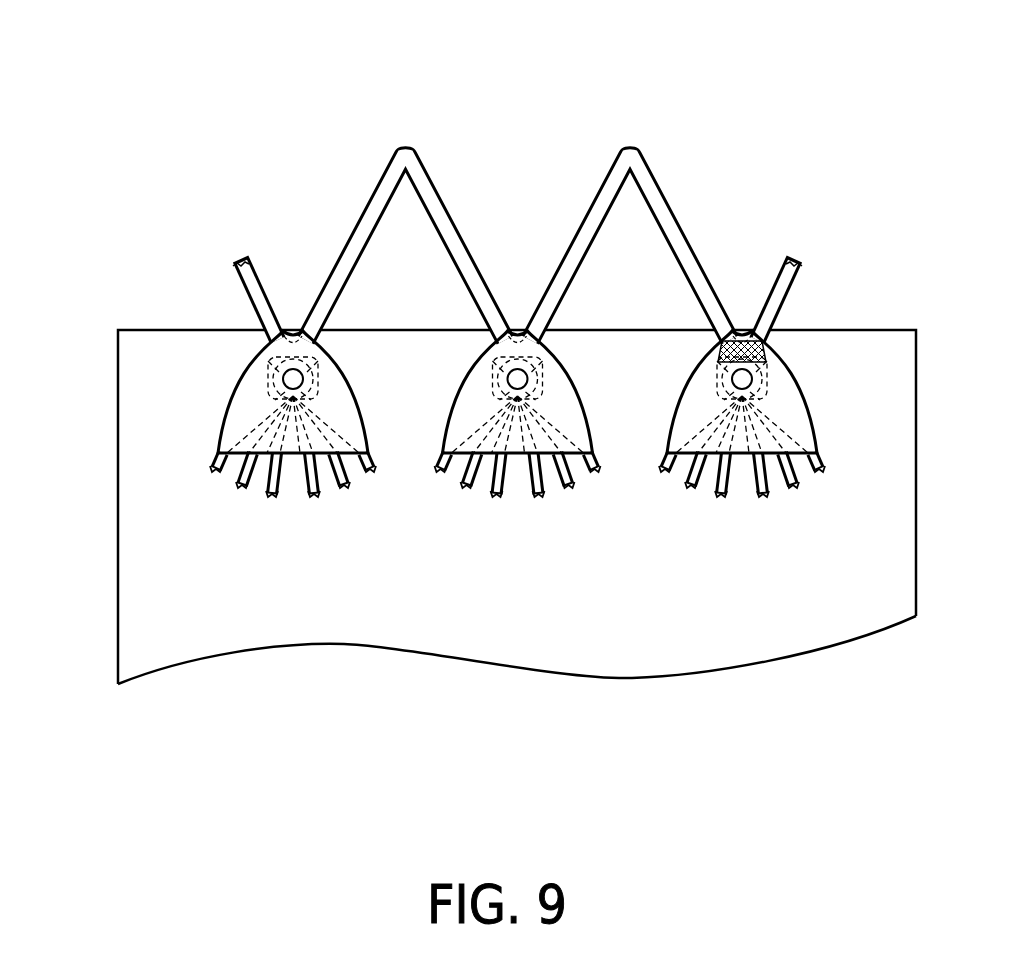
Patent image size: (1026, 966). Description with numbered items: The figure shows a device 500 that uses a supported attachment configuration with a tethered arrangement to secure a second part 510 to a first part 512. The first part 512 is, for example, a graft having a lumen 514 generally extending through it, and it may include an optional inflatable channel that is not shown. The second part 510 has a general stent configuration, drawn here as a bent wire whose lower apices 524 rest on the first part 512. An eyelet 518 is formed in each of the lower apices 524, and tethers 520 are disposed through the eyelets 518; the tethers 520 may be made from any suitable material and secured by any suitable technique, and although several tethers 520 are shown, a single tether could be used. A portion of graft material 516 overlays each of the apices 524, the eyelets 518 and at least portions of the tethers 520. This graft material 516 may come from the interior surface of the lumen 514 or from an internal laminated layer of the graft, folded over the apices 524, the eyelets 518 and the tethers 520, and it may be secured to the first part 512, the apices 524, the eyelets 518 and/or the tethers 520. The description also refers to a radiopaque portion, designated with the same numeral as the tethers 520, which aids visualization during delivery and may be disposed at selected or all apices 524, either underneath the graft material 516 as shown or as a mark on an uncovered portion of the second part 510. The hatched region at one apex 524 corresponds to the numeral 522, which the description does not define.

The device 500 is at (231, 100).
The second part 510 is at (662, 200).
The first part 512 is at (468, 556).
The lumen 514 is at (522, 700).
The portion of graft material 516 is at (333, 385).
The eyelet 518 is at (262, 372).
The tether 520 is at (272, 497).
The adhesive region 522 is at (765, 345).
The lower apex 524 is at (258, 403).